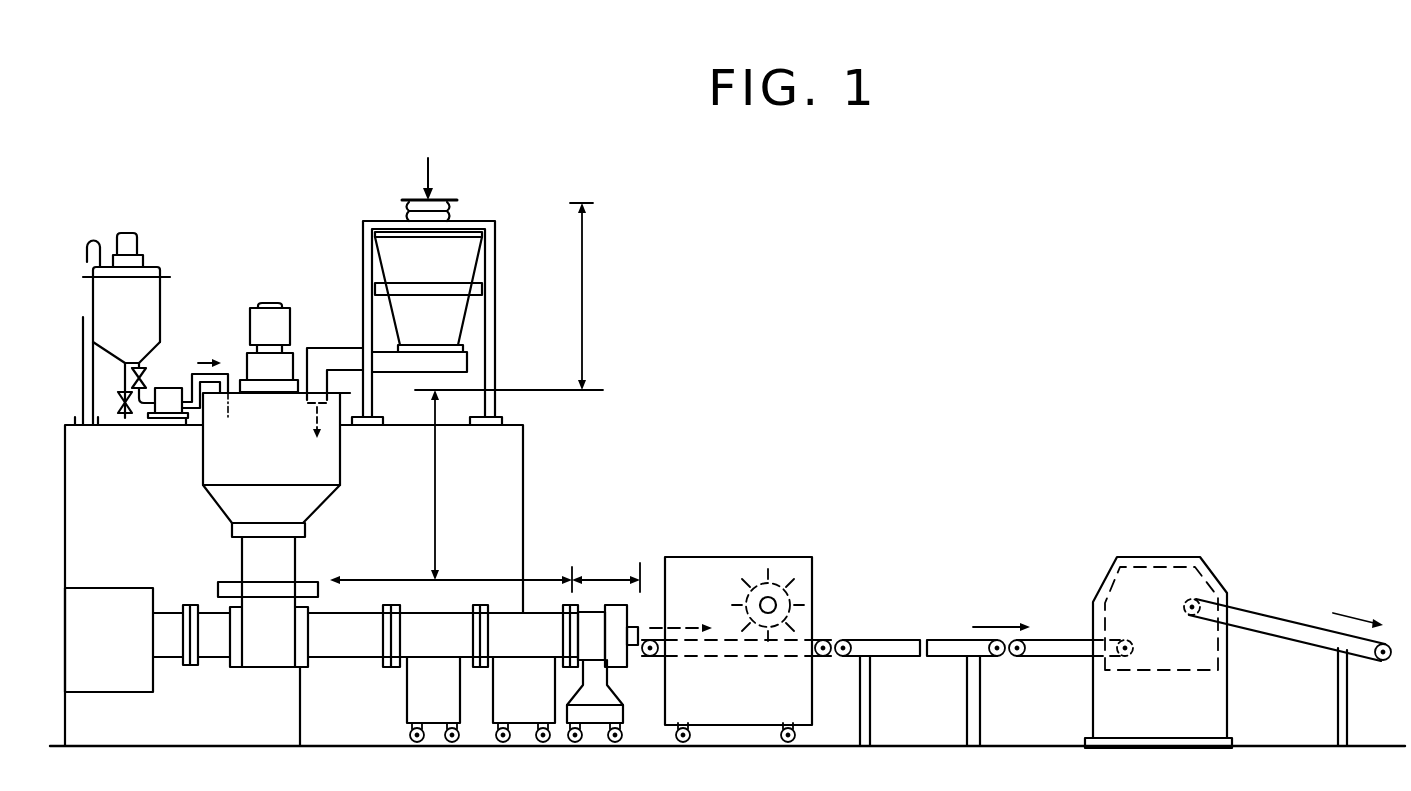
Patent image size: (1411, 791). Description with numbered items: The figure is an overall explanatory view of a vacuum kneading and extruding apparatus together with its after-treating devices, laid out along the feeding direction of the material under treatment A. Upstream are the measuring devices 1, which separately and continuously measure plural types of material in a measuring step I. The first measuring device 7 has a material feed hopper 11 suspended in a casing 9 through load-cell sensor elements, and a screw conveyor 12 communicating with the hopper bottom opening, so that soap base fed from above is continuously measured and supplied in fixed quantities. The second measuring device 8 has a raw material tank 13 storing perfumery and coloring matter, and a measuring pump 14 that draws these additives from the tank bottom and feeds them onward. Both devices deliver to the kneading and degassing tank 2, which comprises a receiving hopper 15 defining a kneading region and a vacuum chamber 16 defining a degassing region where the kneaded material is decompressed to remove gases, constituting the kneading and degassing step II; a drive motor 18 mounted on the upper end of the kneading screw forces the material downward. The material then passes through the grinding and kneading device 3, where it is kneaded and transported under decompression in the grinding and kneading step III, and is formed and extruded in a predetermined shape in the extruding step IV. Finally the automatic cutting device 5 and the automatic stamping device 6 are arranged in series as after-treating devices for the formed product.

The measuring devices 1 is at (280, 194).
The kneading and degassing tank 2 is at (206, 545).
The grinding and kneading device 3 is at (454, 605).
The automatic cutting device 5 is at (769, 547).
The automatic stamping device 6 is at (1154, 548).
The first measuring device 7 is at (353, 248).
The second measuring device 8 is at (162, 264).
The casing 9 is at (493, 275).
The material feed hopper 11 is at (463, 325).
The screw conveyor 12 is at (328, 357).
The raw material tank 13 is at (163, 303).
The measuring pump 14 is at (167, 388).
The receiving hopper 15 is at (340, 469).
The vacuum chamber 16 is at (267, 656).
The drive motor 18 is at (265, 303).
The material under treatment A is at (432, 172).
The measuring step I is at (584, 268).
The kneading and degassing step II is at (439, 462).
The grinding and kneading step III is at (498, 577).
The extruding step IV is at (610, 577).